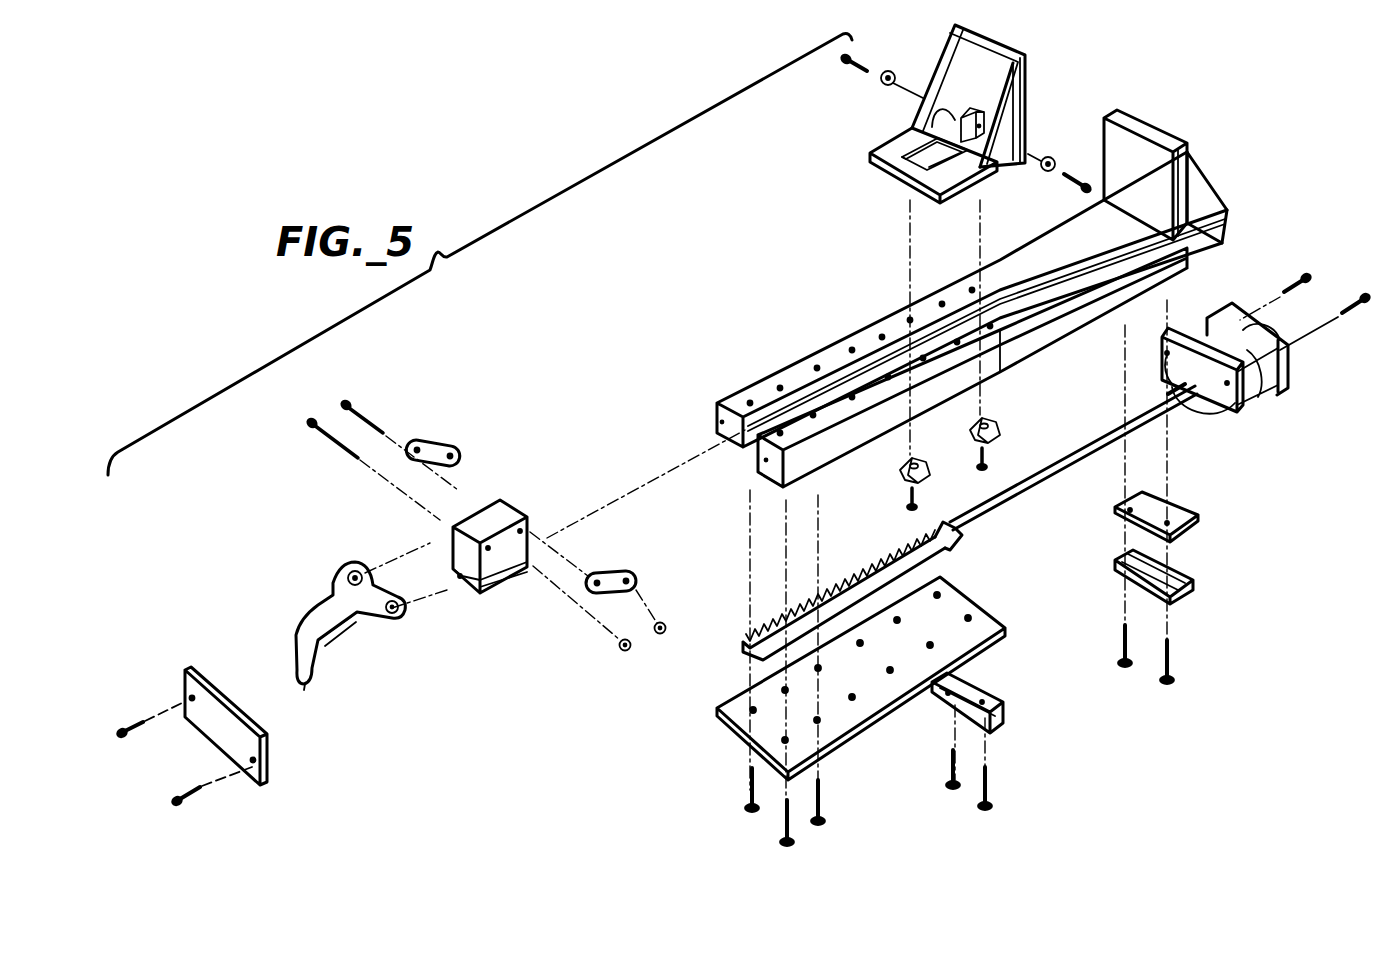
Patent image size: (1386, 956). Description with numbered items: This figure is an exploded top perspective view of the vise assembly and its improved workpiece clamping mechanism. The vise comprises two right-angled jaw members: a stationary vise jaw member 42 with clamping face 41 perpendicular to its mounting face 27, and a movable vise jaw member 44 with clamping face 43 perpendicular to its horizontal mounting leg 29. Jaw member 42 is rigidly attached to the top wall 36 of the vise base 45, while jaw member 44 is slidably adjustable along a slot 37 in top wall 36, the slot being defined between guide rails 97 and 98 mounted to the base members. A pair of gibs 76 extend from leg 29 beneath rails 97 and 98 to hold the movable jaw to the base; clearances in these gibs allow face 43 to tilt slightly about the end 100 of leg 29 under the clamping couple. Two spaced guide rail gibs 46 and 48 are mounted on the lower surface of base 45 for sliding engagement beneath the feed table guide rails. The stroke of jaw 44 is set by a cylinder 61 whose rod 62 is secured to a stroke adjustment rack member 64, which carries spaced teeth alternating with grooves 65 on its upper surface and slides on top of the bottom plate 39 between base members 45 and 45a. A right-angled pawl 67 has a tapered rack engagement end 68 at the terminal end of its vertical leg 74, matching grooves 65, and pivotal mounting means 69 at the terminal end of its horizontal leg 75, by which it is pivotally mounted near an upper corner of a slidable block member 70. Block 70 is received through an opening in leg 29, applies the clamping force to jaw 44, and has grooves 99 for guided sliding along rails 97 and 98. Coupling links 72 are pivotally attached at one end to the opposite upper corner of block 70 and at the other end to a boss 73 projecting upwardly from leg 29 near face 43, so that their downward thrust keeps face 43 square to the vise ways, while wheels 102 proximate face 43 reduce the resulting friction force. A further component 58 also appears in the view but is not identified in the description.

The mounting face 27 is at (1229, 208).
The mounting face 29 is at (878, 152).
The top wall 36 is at (933, 336).
The slot 37 is at (933, 302).
The bottom plate 39 is at (850, 716).
The clamping face 41 is at (1153, 150).
The vise jaw member 42 is at (1164, 157).
The clamping face 43 is at (1030, 86).
The vise jaw member 44 is at (1012, 33).
The vise base 45 is at (983, 373).
The base member 45a is at (733, 452).
The guide rail gib 46 is at (1192, 592).
The guide rail gib 48 is at (990, 718).
The cover plate 58 is at (210, 728).
The cylinder 61 is at (1262, 395).
The rod 62 is at (1021, 490).
The stroke adjustment rack member 64 is at (866, 591).
The grooves 65 is at (888, 556).
The pawl 67 is at (321, 626).
The rack engagement end 68 is at (305, 686).
The pivotal mounting means 69 is at (359, 570).
The slidable block member 70 is at (482, 572).
The coupling links 72 is at (436, 443).
The boss 73 is at (957, 125).
The vertical leg 74 is at (296, 652).
The horizontal leg 75 is at (345, 628).
The gibs 76 is at (980, 447).
The guide rail 97 is at (714, 420).
The guide rail 98 is at (1000, 358).
The grooves 99 is at (502, 580).
The end 100 is at (905, 174).
The wheels 102 is at (903, 42).